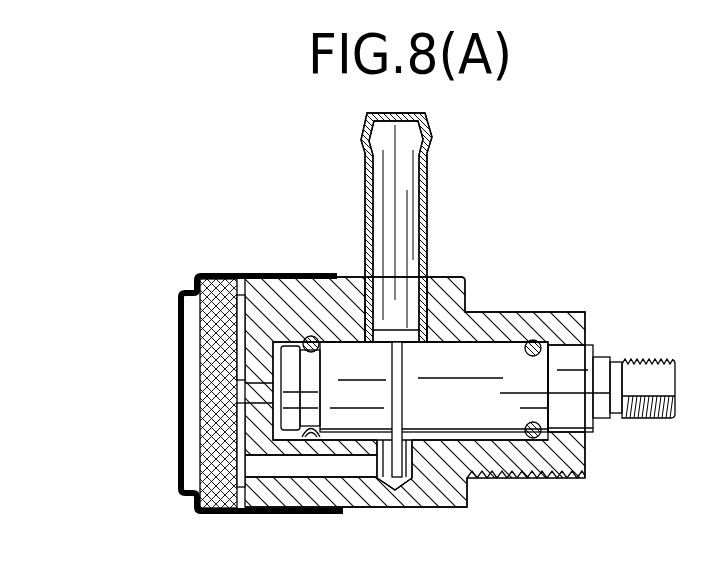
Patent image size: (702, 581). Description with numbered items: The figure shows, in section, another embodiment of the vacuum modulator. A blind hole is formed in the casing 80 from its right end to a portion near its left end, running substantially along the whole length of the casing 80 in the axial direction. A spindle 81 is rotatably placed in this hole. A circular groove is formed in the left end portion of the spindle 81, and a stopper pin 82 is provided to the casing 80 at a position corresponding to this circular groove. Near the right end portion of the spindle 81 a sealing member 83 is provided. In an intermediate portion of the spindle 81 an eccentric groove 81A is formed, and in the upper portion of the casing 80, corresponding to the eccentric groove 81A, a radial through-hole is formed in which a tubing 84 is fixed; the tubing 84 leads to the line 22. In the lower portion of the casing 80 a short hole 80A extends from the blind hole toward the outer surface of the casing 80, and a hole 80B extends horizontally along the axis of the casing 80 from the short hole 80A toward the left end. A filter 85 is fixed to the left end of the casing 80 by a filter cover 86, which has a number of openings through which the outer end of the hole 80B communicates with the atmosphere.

The line 22 is at (395, 113).
The casing 80 is at (455, 295).
The short hole 80A is at (409, 465).
The hole 80B is at (333, 463).
The spindle 81 is at (480, 376).
The eccentric groove 81A is at (396, 350).
The stopper pin 82 is at (312, 335).
The sealing member 83 is at (537, 340).
The tubing 84 is at (428, 189).
The filter 85 is at (215, 432).
The filter cover 86 is at (181, 385).